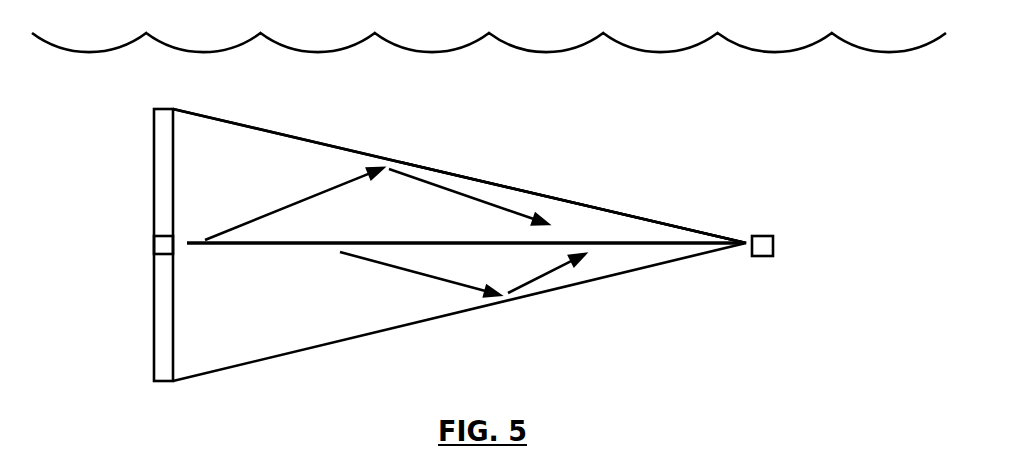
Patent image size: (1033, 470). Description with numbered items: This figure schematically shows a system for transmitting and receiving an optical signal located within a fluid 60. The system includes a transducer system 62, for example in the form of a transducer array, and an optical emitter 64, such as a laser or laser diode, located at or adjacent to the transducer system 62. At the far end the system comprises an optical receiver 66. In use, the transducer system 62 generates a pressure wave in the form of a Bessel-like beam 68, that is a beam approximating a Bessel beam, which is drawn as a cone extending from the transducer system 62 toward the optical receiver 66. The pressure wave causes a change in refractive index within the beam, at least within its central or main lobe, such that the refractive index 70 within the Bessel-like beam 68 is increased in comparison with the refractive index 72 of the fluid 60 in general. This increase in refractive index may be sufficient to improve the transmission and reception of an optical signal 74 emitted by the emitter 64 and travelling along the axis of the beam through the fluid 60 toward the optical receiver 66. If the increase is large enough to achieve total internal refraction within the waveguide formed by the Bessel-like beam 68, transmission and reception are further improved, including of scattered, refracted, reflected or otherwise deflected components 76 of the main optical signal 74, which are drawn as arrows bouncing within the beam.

The fluid 60 is at (833, 104).
The transducer system 62 is at (154, 153).
The optical emitter 64 is at (153, 244).
The optical receiver 66 is at (776, 246).
The Bessel-like beam 68 is at (567, 201).
The refractive index within the Bessel-like beam 70 is at (213, 153).
The refractive index of the fluid 72 is at (256, 116).
The optical signal 74 is at (257, 245).
The deflected components 76 is at (282, 203).